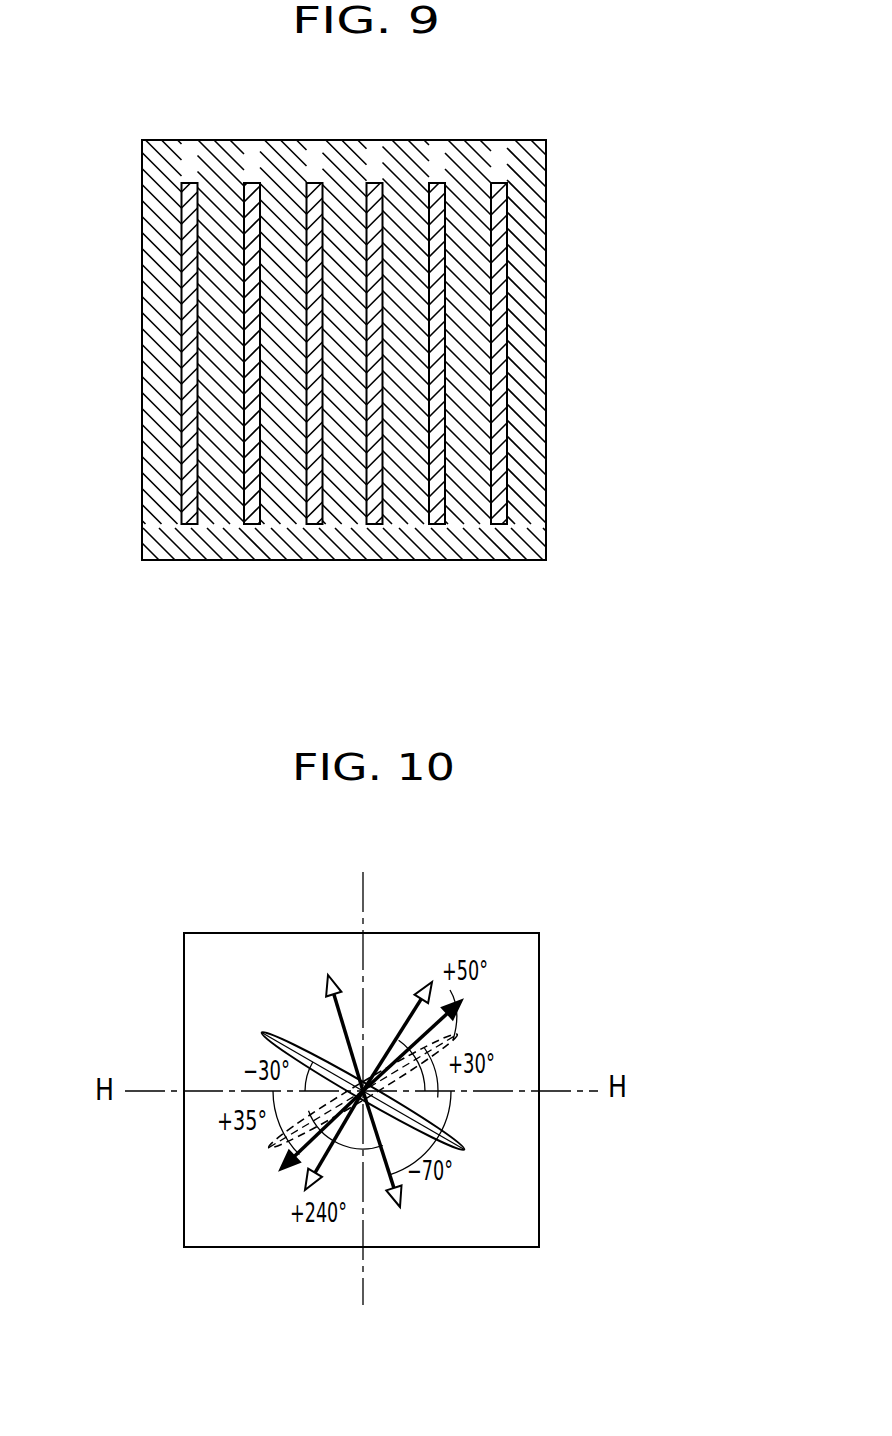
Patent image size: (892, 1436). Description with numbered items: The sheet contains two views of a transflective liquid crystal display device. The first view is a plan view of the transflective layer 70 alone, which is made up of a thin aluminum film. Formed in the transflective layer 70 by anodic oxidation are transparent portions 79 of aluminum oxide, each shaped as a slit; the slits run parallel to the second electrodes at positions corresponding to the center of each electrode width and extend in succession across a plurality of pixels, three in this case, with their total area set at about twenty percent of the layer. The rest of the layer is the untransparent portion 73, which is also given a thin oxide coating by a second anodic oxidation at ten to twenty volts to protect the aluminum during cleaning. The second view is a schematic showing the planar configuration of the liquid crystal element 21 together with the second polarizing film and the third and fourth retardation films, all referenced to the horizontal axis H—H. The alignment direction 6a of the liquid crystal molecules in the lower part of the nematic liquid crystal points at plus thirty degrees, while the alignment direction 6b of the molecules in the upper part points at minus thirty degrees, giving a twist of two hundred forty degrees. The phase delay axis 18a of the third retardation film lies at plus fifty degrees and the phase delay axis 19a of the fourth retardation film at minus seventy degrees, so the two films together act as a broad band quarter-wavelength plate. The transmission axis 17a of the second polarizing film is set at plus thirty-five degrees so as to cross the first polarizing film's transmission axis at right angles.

In FIG. 9, the transflective layer 70 is at (400, 343).
In FIG. 9, the transparent portions 79 is at (498, 328).
In FIG. 9, the untransparent portion 73 is at (545, 445).
In FIG. 10, the alignment direction of liquid crystal molecules in the lower part 6a is at (453, 1040).
In FIG. 10, the alignment direction of liquid crystal molecules in the upper part 6b is at (290, 1037).
In FIG. 10, the transmission axis 17a is at (283, 1163).
In FIG. 10, the phase delay axis 18a is at (420, 992).
In FIG. 10, the phase delay axis 19a is at (407, 1196).
In FIG. 10, the liquid crystal element 21 is at (523, 1160).